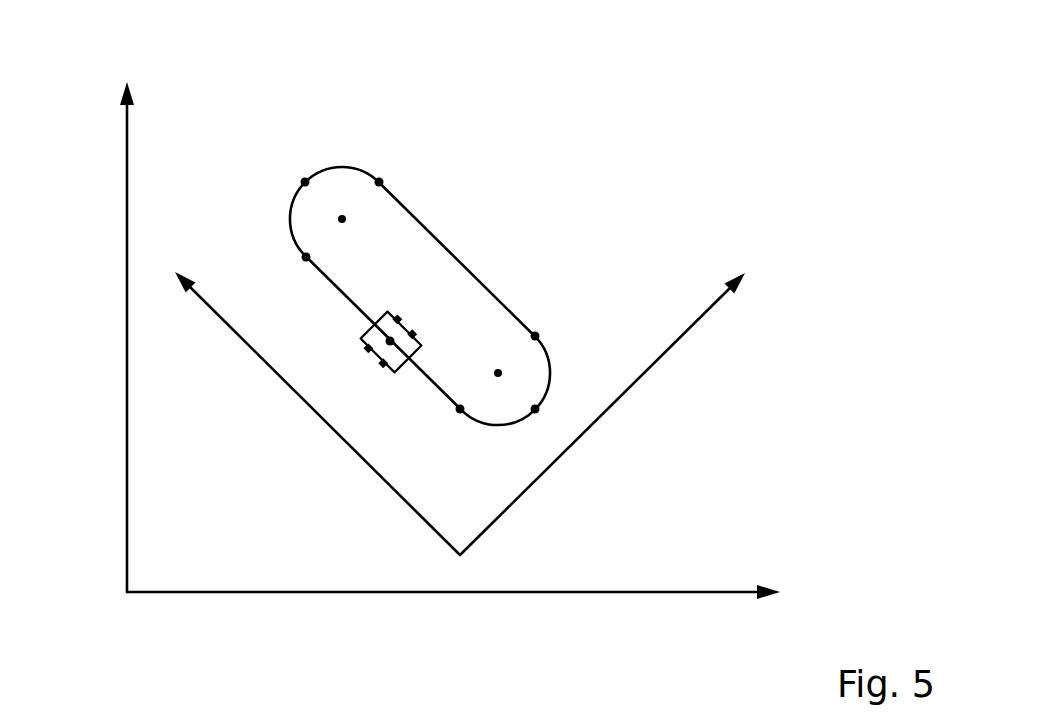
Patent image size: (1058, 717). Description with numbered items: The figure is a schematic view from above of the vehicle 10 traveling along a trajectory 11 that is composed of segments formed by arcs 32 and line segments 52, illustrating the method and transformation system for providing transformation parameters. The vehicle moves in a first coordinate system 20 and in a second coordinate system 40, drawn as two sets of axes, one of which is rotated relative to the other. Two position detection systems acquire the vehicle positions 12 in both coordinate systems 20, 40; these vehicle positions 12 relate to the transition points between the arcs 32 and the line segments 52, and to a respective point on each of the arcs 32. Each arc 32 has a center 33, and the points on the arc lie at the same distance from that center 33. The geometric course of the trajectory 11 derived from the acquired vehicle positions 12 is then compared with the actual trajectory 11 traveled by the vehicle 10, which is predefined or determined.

The vehicle 10 is at (387, 313).
The trajectory 11 is at (464, 359).
The vehicle positions 12 is at (305, 182).
The first coordinate system 20 is at (677, 340).
The arcs 32 is at (337, 167).
The center 33 is at (342, 219).
The second coordinate system 40 is at (710, 590).
The line segments 52 is at (412, 212).